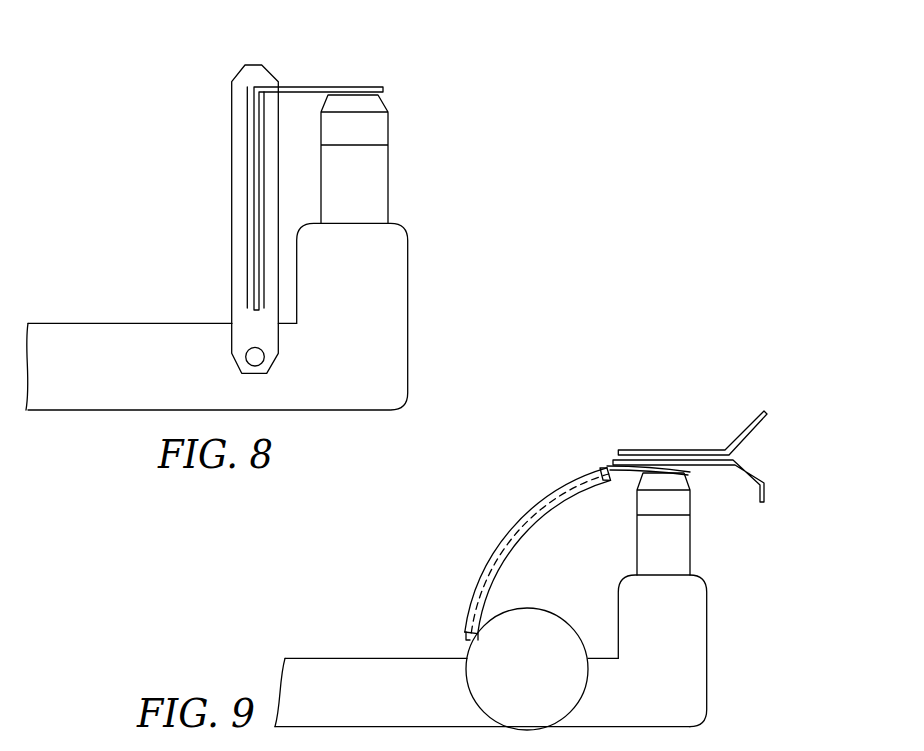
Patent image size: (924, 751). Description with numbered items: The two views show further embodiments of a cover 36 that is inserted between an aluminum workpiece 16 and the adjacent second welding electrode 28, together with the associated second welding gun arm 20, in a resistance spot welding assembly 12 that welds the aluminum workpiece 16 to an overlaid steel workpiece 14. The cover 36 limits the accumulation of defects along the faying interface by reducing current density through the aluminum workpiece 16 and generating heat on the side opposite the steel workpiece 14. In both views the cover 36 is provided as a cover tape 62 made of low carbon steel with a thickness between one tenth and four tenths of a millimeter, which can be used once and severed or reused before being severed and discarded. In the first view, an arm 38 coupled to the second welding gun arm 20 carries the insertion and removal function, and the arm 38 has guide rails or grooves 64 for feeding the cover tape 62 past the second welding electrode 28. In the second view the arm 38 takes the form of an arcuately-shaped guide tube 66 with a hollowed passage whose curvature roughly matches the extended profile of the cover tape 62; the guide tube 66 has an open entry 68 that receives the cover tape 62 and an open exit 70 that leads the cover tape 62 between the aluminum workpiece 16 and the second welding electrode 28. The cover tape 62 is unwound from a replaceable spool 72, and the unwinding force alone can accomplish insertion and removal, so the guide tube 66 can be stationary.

In FIG. 9, the panel assembly 12 is at (717, 454).
In FIG. 9, the steel workpiece 14 is at (678, 448).
In FIG. 9, the aluminum workpiece 16 is at (738, 455).
In FIG. 8, the second welding gun arm 20 is at (408, 300).
In FIG. 9, the second welding gun arm 20 is at (707, 655).
In FIG. 8, the second welding electrode 28 is at (385, 125).
In FIG. 9, the second welding electrode 28 is at (690, 537).
In FIG. 8, the cover 36 is at (358, 87).
In FIG. 9, the cover 36 is at (632, 475).
In FIG. 8, the arm 38 is at (232, 197).
In FIG. 9, the arm 38 is at (508, 563).
In FIG. 8, the cover tape 62 is at (298, 88).
In FIG. 9, the cover tape 62 is at (620, 463).
In FIG. 8, the guide rails or grooves 64 is at (245, 145).
In FIG. 9, the guide tube 66 is at (517, 530).
In FIG. 9, the open entry 68 is at (470, 645).
In FIG. 9, the open exit 70 is at (603, 470).
In FIG. 9, the spool 72 is at (575, 710).